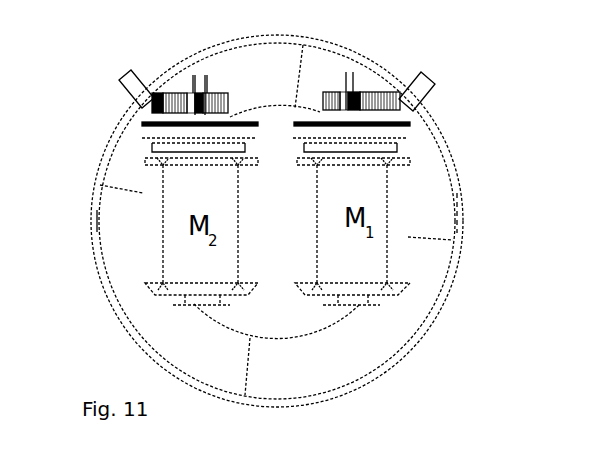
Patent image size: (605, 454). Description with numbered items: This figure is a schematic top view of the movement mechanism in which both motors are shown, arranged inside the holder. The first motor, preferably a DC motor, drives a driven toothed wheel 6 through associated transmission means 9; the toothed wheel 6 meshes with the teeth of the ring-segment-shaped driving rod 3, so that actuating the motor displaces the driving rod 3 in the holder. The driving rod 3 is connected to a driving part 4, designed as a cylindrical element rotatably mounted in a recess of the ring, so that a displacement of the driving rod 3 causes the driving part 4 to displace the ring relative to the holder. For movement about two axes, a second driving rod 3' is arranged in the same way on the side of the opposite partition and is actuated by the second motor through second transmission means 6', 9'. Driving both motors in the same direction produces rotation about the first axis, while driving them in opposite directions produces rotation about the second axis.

The driving rod 3 is at (361, 64).
The second driving rod 3' is at (184, 68).
The driven toothed wheel 6 is at (367, 64).
The second transmission means 6' is at (188, 64).
The driving part 4 is at (425, 76).
The transmission means 9 is at (385, 137).
The second transmission means 9' is at (158, 142).